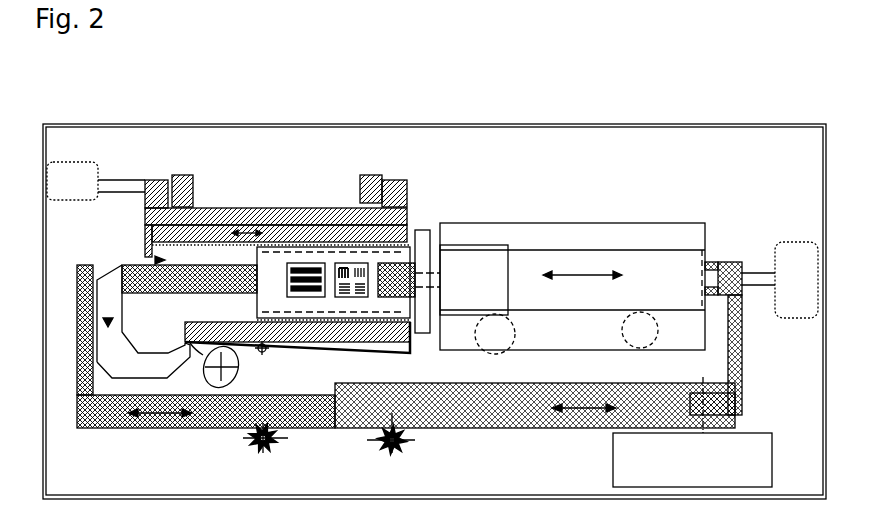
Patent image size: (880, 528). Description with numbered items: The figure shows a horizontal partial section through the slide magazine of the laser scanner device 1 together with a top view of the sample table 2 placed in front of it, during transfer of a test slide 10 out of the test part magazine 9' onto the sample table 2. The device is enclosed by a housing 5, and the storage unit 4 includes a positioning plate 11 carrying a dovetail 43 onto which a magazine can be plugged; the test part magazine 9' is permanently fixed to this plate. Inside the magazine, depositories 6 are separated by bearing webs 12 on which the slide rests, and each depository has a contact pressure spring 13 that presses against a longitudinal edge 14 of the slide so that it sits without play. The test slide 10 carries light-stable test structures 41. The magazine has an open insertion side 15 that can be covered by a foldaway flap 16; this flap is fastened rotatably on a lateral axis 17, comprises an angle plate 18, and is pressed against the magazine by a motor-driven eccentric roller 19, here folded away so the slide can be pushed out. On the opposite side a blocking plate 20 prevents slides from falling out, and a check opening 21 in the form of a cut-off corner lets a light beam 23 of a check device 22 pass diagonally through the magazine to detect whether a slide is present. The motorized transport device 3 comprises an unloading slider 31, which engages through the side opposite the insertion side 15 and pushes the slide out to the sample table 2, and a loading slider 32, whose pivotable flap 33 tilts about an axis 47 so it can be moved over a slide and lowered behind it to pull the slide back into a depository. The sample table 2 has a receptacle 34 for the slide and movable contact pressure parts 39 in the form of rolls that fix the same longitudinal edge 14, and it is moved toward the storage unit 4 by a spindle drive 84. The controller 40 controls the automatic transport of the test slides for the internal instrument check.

The laser scanner device 1 is at (684, 71).
The housing 5 is at (680, 124).
The storage unit 4 is at (113, 163).
The dovetail 43 is at (233, 207).
The positioning plate 11 is at (340, 207).
The test part magazine 9' is at (254, 197).
The blocking plate 20 is at (143, 232).
The depository 6 is at (152, 260).
The light beam 23 is at (185, 305).
The check opening 21 is at (80, 340).
The check device 22 is at (128, 360).
The bearing webs 12 is at (255, 249).
The test structures 41 is at (305, 298).
The foldaway flap 16 is at (393, 298).
The contact pressure spring 13 is at (262, 353).
The longitudinal edge 14 is at (432, 230).
The insertion side 15 is at (443, 250).
The sample table 2 is at (646, 287).
The test slide 10 is at (478, 290).
The receptacle 34 is at (529, 268).
The contact pressure parts 39 is at (636, 330).
The spindle drive 84 is at (752, 277).
The pivotable flap 33 is at (736, 330).
The axis 47 is at (738, 407).
The transport device 3 is at (406, 432).
The unloading slider 31 is at (120, 415).
The loading slider 32 is at (627, 417).
The eccentric roller 19 is at (217, 390).
The angle plate 18 is at (200, 352).
The axis 17 is at (233, 432).
The controller 40 is at (737, 473).